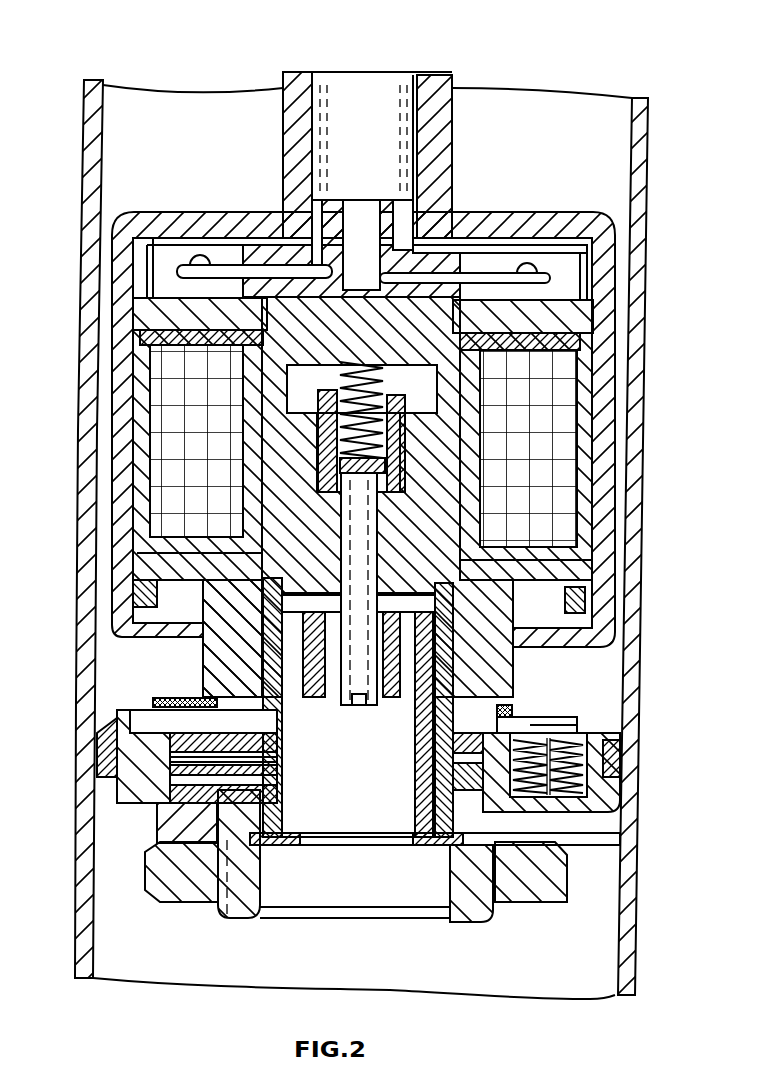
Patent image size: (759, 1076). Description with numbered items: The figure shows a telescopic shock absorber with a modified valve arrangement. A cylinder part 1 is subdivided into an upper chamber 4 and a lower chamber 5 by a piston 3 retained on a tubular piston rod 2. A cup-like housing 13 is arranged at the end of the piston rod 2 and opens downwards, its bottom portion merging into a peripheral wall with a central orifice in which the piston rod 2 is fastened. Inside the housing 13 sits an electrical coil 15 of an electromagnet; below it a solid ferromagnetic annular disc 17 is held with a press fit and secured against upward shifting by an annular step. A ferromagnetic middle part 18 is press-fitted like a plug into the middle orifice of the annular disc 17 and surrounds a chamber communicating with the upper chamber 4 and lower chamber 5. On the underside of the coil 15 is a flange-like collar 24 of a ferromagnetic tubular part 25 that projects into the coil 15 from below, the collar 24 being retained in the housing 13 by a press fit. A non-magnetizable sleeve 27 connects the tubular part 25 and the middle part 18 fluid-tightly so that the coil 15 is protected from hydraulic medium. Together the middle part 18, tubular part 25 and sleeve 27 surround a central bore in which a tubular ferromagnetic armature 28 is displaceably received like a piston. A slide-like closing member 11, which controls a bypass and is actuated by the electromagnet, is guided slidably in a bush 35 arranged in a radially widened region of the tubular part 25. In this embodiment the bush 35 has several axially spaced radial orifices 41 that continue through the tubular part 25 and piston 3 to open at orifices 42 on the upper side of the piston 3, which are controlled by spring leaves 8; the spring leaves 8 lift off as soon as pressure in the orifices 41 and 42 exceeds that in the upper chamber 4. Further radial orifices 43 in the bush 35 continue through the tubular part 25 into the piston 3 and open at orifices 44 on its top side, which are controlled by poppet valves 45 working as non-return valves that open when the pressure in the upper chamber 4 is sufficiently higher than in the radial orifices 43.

The cylinder part 1 is at (90, 148).
The piston rod 2 is at (300, 72).
The piston 3 is at (113, 777).
The upper chamber 4 is at (127, 112).
The lower chamber 5 is at (120, 940).
The spring leaves 8 is at (155, 700).
The closing member 11 is at (547, 847).
The cup-like housing 13 is at (585, 214).
The electrical coil 15 is at (163, 448).
The annular disc 17 is at (575, 325).
The middle part 18 is at (450, 370).
The collar 24 is at (578, 597).
The tubular part 25 is at (443, 530).
The sleeve 27 is at (453, 450).
The tubular armature 28 is at (295, 515).
The bush 35 is at (283, 705).
The radial orifices 41 is at (300, 748).
The orifices 42 is at (135, 718).
The radial orifices 43 is at (420, 775).
The orifices 44 is at (555, 717).
The poppet valves 45 is at (598, 732).